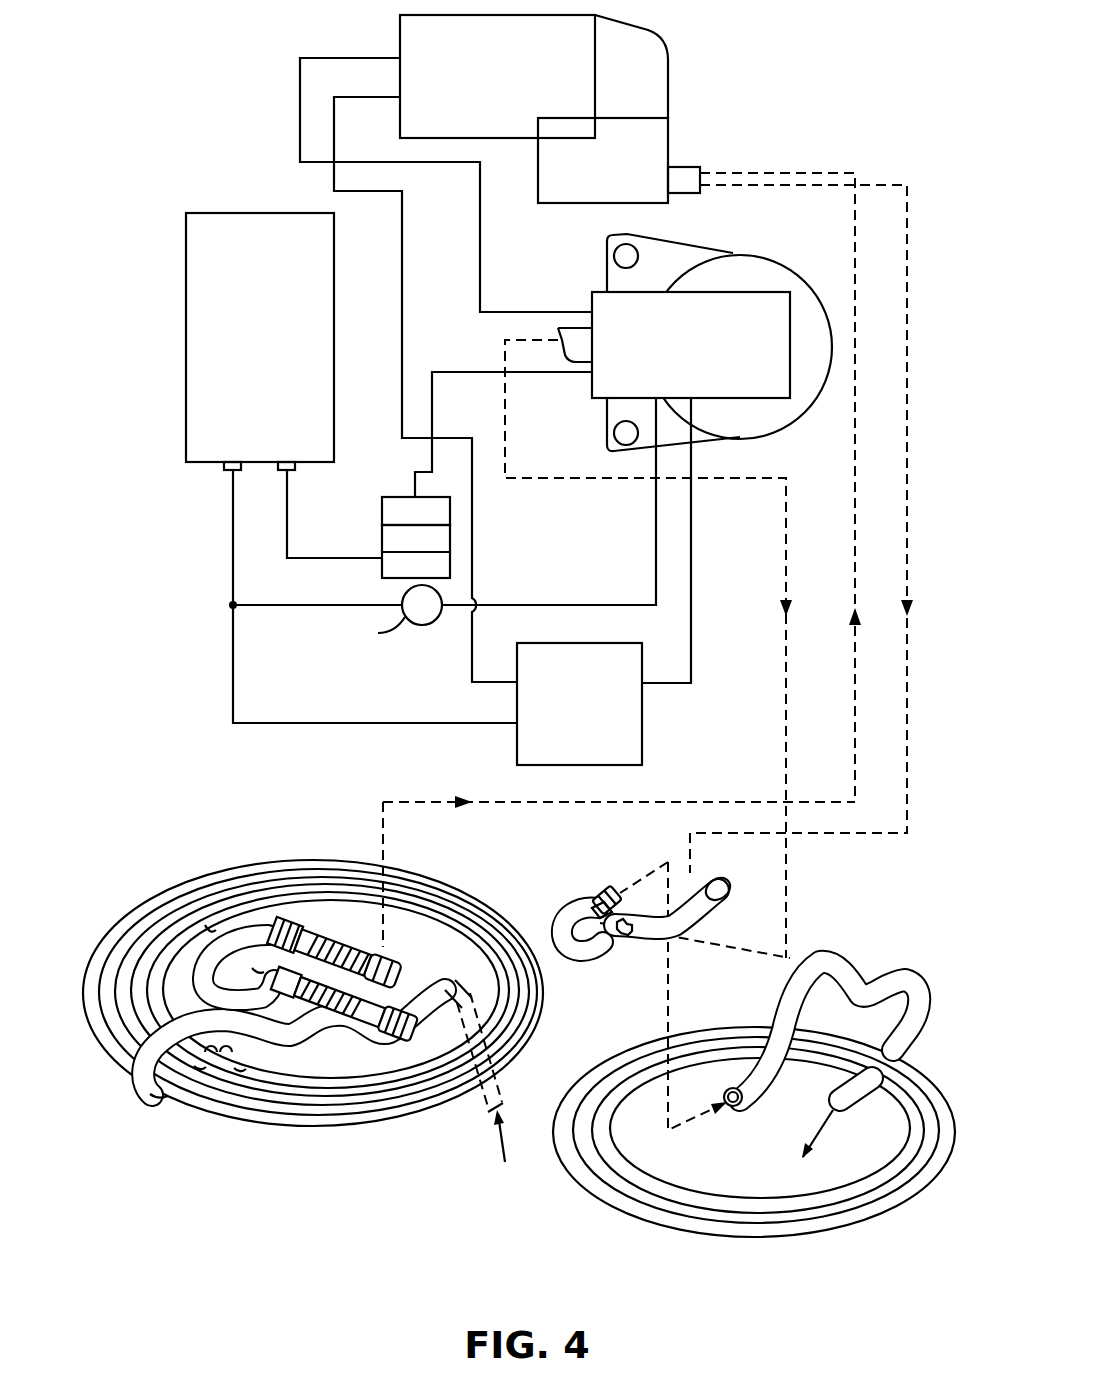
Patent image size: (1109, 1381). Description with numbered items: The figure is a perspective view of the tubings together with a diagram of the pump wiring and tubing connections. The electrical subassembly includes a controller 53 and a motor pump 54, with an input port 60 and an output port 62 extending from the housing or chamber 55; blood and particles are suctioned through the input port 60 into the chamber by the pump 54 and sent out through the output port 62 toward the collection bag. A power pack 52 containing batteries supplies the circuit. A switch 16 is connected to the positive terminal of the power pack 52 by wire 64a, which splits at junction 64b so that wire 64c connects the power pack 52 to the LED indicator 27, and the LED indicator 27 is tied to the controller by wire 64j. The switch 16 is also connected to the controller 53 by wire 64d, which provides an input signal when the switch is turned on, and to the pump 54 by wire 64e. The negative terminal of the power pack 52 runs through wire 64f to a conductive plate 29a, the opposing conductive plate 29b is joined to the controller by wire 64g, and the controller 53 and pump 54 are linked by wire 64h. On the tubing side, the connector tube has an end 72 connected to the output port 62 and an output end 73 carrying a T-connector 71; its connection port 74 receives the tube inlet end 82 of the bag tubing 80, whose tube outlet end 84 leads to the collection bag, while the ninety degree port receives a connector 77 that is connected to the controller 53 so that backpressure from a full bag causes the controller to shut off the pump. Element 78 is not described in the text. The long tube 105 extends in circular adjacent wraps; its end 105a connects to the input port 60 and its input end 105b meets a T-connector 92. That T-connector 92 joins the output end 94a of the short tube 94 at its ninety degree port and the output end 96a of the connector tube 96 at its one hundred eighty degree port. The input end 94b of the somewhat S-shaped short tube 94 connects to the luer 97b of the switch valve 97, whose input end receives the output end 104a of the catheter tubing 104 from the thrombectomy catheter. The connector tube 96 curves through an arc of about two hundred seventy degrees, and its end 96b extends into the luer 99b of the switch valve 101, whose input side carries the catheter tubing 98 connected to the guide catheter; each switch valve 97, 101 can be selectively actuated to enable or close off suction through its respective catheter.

The switch 16 is at (579, 704).
The LED indicator 27 is at (361, 631).
The conductive plate 29a is at (416, 552).
The conductive plate 29b is at (416, 511).
The power pack 52 is at (260, 341).
The controller 53 is at (668, 596).
The motor pump 54 is at (534, 76).
The housing (chamber) 55 is at (603, 160).
The input port 60 is at (700, 167).
The output port 62 is at (700, 193).
The wire 64a is at (233, 675).
The junction 64b is at (233, 603).
The wire 64c is at (287, 605).
The wire 64d is at (691, 600).
The wire 64e is at (473, 537).
The wire 64f is at (287, 515).
The wire 64g is at (460, 372).
The wire 64h is at (482, 262).
The wire 64j is at (520, 605).
The T-connector 71 is at (597, 895).
The opposing end of connector tube 72 is at (712, 882).
The output end of connector tube 73 is at (578, 918).
The connection port 74 is at (608, 900).
The connector 77 is at (616, 935).
The hose 78 is at (722, 913).
The bag tubing 80 is at (912, 1080).
The tube inlet end 82 is at (740, 1103).
The tube outlet end 84 is at (842, 1107).
The T-connector 92 is at (213, 1054).
The short tube 94 is at (190, 910).
The output end of short tube 94a is at (240, 1070).
The input end of short tube 94b is at (257, 970).
The connector tube 96 is at (210, 930).
The output end of connector tube 96a is at (168, 1068).
The input end of connector tube 96b is at (432, 1045).
The switch valve 97 is at (328, 935).
The luer 97b is at (297, 925).
The catheter tubing 98 is at (208, 963).
The luer 99b is at (392, 1048).
The switch valve 101 is at (315, 1000).
The catheter tubing 104 is at (503, 1088).
The output end of catheter tubing 104a is at (460, 1005).
The long tube 105 is at (378, 1100).
The end of long tube 105a is at (398, 960).
The input end of long tube 105b is at (200, 1068).